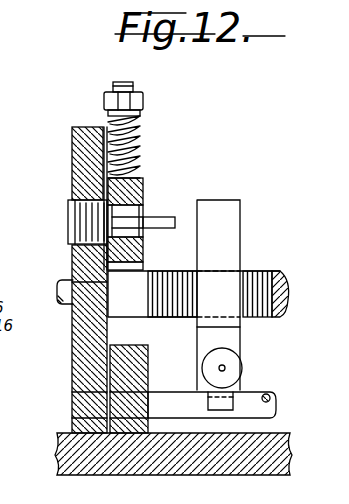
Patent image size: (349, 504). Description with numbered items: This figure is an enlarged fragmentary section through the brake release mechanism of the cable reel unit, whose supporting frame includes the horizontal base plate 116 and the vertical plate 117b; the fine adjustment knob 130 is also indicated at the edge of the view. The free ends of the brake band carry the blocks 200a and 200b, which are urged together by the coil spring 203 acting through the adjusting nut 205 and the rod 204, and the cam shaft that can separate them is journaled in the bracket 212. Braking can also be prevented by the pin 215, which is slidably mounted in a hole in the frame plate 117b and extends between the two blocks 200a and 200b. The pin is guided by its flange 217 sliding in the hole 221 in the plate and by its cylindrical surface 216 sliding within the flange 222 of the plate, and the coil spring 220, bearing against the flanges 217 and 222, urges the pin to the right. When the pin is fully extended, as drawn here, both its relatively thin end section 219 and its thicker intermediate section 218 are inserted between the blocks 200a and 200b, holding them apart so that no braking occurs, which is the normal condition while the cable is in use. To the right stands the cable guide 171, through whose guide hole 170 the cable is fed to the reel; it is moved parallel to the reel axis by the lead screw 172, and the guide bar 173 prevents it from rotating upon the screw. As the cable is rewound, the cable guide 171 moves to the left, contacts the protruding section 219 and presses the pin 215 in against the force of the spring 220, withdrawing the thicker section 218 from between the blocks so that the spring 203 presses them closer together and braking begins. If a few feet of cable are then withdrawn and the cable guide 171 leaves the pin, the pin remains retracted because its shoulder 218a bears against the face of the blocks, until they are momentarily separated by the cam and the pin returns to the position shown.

The rod 204 is at (125, 82).
The adjusting nut 205 is at (143, 100).
The coil spring 203 is at (140, 125).
The block 200a is at (143, 181).
The thicker intermediate section 218 is at (143, 190).
The thin end section 219 is at (175, 222).
The shoulder 218a is at (143, 246).
The block 200b is at (146, 266).
The cable guide 171 is at (222, 210).
The lead screw 172 is at (273, 272).
The guide hole 170 is at (225, 368).
The guide bar 173 is at (252, 400).
The bracket 212 is at (135, 362).
The vertical plate 117b is at (80, 150).
The hole 221 is at (73, 190).
The flange 222 is at (73, 204).
The cylindrical surface 216 is at (70, 222).
The pin 215 is at (55, 235).
The flange 217 is at (100, 230).
The coil spring 220 is at (66, 258).
The horizontal base plate 116 is at (178, 467).
The knob 130 is at (18, 500).